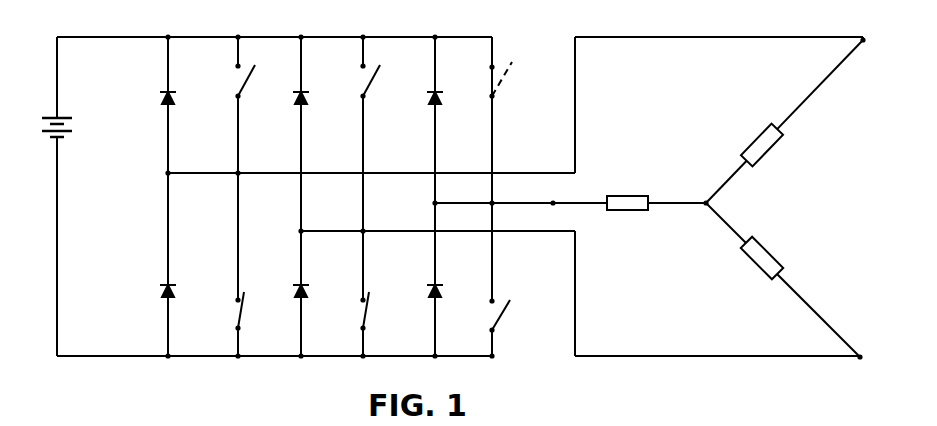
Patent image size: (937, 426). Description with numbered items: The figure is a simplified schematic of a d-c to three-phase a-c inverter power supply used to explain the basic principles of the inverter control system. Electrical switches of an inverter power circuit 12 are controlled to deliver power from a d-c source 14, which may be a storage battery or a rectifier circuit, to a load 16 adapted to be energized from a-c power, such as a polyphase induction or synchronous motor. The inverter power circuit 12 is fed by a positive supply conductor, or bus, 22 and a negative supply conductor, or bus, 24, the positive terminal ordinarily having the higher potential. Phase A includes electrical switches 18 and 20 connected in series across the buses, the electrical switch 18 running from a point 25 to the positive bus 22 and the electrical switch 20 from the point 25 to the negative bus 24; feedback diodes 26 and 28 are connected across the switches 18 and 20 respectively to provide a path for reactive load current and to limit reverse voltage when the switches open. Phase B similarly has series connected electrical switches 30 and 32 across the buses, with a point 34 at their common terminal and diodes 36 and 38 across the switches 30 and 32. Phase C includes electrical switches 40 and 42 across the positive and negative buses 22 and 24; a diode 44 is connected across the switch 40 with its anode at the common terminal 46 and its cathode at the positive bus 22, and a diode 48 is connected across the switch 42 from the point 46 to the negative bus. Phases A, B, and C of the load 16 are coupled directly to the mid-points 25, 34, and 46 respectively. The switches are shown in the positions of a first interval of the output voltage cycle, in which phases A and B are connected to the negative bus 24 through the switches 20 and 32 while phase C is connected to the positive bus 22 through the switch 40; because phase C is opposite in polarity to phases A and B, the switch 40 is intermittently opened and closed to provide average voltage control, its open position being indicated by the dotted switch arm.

The inverter power circuit 12 is at (348, 29).
The d-c source 14 is at (50, 115).
The load 16 is at (733, 31).
The electrical switch 18 is at (247, 85).
The electrical switch 20 is at (242, 312).
The positive supply conductor 22 is at (137, 37).
The negative supply conductor 24 is at (128, 357).
The point 25 is at (240, 175).
The diode 26 is at (160, 97).
The diode 28 is at (162, 284).
The electrical switch 30 is at (371, 80).
The electrical switch 32 is at (367, 312).
The point 34 is at (363, 231).
The diode 36 is at (310, 96).
The diode 38 is at (330, 294).
The electrical switch 40 is at (492, 67).
The electrical switch 42 is at (501, 316).
The diode 44 is at (444, 96).
The common terminal 46 is at (492, 203).
The diode 48 is at (464, 294).
The phase A is at (756, 132).
The phase B is at (776, 260).
The phase C is at (622, 196).